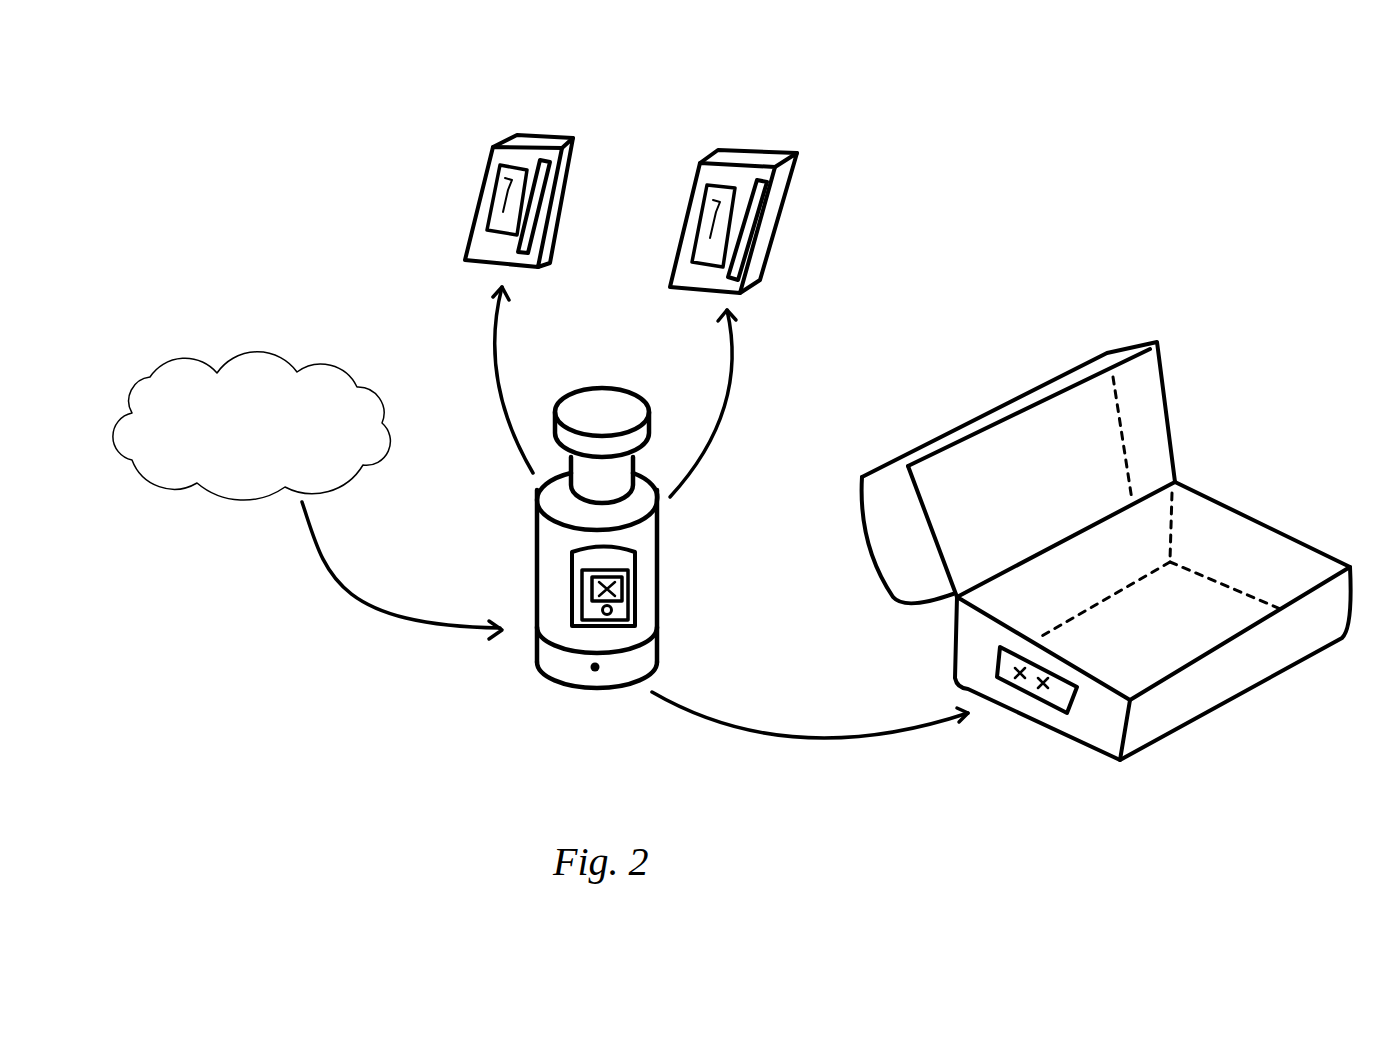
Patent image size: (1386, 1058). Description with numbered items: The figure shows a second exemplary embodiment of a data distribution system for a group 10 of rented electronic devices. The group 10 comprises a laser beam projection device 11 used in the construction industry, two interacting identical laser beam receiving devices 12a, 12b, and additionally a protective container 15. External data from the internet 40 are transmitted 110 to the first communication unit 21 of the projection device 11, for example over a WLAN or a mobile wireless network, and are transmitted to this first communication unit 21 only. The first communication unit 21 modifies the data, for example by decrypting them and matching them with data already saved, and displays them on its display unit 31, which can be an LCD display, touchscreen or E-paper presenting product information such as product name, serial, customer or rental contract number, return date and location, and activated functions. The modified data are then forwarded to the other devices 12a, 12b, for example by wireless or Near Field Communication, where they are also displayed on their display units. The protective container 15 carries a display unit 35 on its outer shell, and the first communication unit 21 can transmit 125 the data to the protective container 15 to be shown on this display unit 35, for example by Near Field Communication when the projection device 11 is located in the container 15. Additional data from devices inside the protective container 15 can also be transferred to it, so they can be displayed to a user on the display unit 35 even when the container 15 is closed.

The group of electronic devices 10 is at (935, 135).
The laser beam projection device 11 is at (537, 685).
The laser beam receiving device 12a is at (538, 120).
The laser beam receiving device 12b is at (753, 137).
The protective container 15 is at (1040, 355).
The first communication unit 21 is at (562, 552).
The display unit 31 is at (622, 590).
The display unit 35 is at (1062, 697).
The internet 40 is at (263, 335).
The data transmission 110 is at (402, 590).
The data transmission to protective container 125 is at (810, 733).